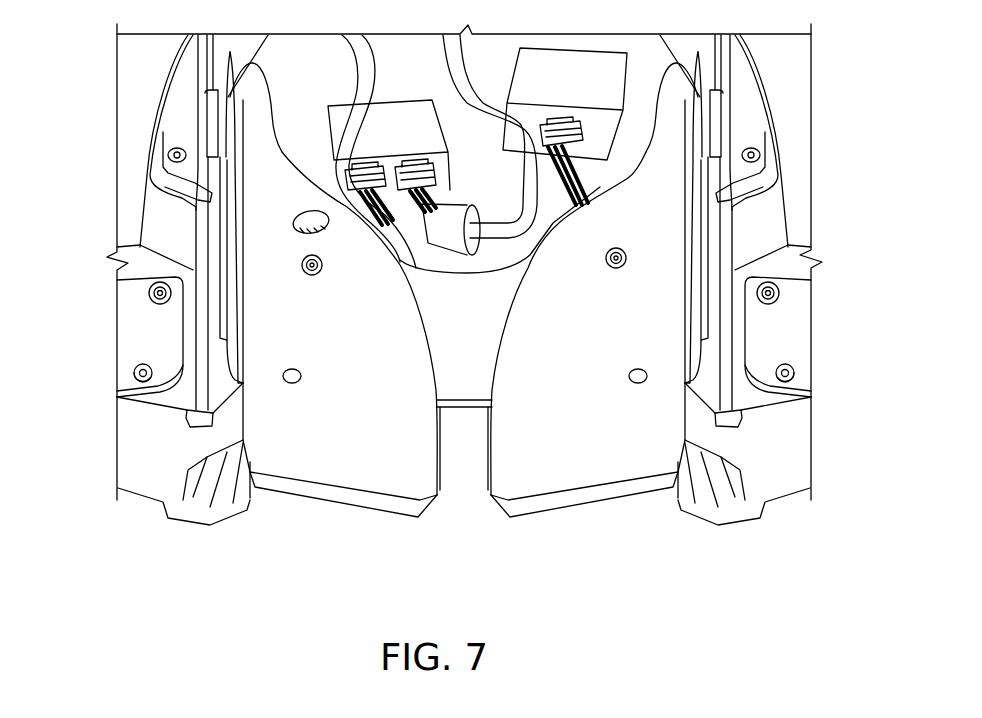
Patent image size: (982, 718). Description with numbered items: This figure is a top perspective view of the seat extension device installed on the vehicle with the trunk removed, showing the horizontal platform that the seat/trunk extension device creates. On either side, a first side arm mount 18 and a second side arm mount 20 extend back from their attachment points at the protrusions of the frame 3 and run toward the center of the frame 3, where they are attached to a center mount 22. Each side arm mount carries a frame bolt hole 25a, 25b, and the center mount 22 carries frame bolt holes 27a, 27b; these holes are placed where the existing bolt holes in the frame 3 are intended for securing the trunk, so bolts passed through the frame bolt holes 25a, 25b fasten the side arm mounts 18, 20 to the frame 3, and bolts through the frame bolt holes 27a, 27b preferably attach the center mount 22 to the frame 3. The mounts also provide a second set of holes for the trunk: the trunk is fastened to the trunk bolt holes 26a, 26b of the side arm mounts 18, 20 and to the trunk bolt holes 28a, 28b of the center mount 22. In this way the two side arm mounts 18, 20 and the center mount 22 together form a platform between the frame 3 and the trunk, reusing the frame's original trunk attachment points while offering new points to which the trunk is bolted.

The frame 3 is at (290, 98).
The first side arm mount 18 is at (663, 213).
The second side arm mount 20 is at (267, 247).
The center mount 22 is at (463, 373).
The frame bolt hole of side arm mount 25a is at (765, 291).
The frame bolt hole of center mount 27a is at (620, 268).
The frame bolt hole of side arm mount 25b is at (163, 297).
The frame bolt hole of center mount 27b is at (310, 276).
The trunk bolt hole of side arm mount 26a is at (640, 468).
The trunk bolt hole of center mount 28a is at (643, 383).
The trunk bolt hole of side arm mount 26b is at (291, 468).
The trunk bolt hole of center mount 28b is at (287, 383).